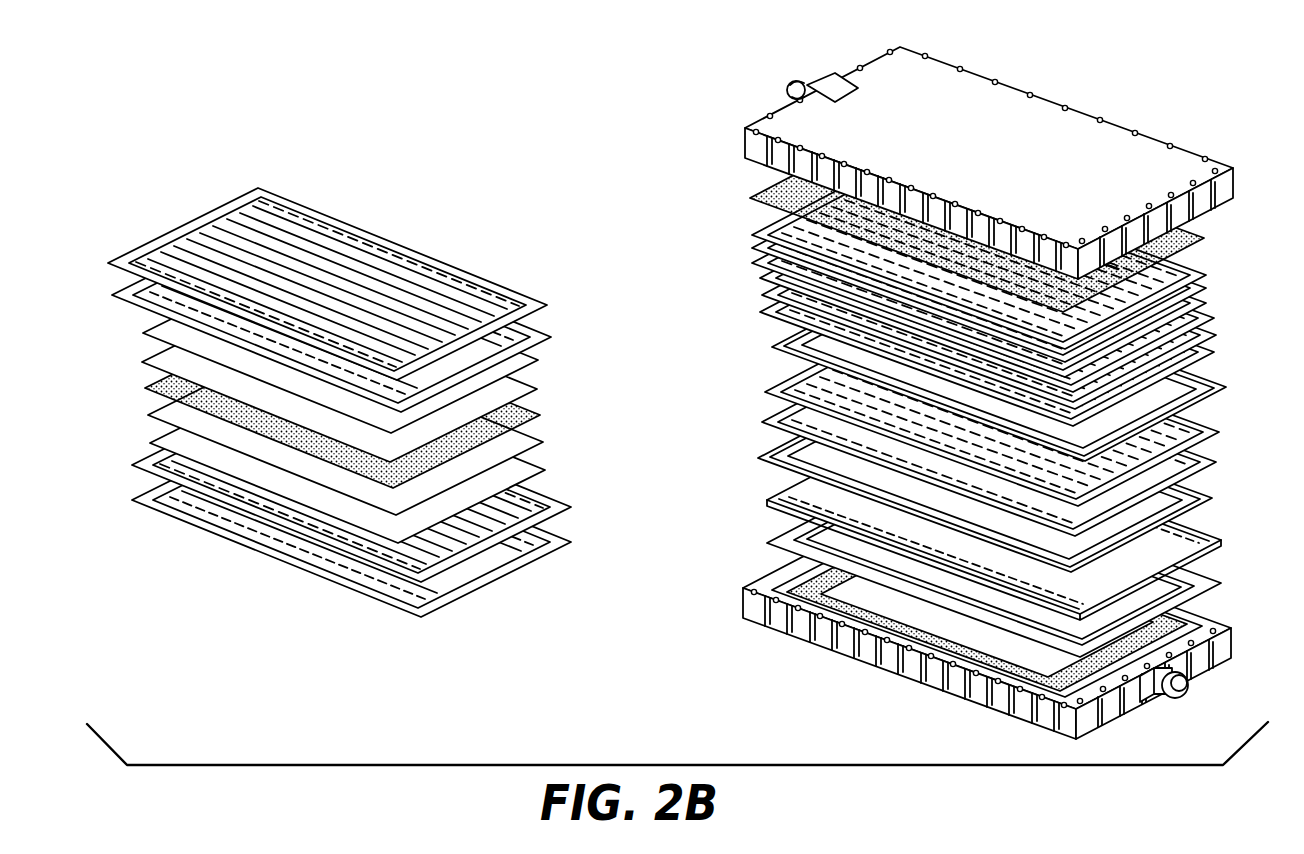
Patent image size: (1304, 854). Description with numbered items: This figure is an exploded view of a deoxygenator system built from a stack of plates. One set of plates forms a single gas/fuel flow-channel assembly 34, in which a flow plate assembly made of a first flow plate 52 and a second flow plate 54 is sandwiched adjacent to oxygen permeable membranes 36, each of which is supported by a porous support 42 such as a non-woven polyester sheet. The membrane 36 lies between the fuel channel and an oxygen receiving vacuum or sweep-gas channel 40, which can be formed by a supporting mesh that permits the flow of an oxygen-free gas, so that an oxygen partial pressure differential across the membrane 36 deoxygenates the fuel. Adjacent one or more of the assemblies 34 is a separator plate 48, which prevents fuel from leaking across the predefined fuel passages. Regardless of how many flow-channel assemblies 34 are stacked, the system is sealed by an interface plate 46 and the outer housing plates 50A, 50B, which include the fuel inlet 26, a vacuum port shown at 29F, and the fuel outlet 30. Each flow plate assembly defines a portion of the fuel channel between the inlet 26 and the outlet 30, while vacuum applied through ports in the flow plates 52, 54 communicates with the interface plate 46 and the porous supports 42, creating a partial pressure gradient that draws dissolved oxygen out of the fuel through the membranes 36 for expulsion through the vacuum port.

The fuel inlet 26 is at (790, 82).
The thermal interface material 29F is at (783, 185).
The fuel outlet 30 is at (1185, 695).
The gas/fuel flow-channel assembly 34 is at (437, 377).
The oxygen permeable membrane 36 is at (535, 362).
The oxygen receiving vacuum or sweep-gas channel 40 is at (532, 422).
The porous support 42 is at (533, 392).
The interface plate 46 is at (767, 543).
The separator plate 48 is at (772, 347).
The outer housing plate 50A is at (1022, 160).
The outer housing plate 50B is at (940, 680).
The first flow plate 52 is at (523, 298).
The second flow plate 54 is at (545, 340).